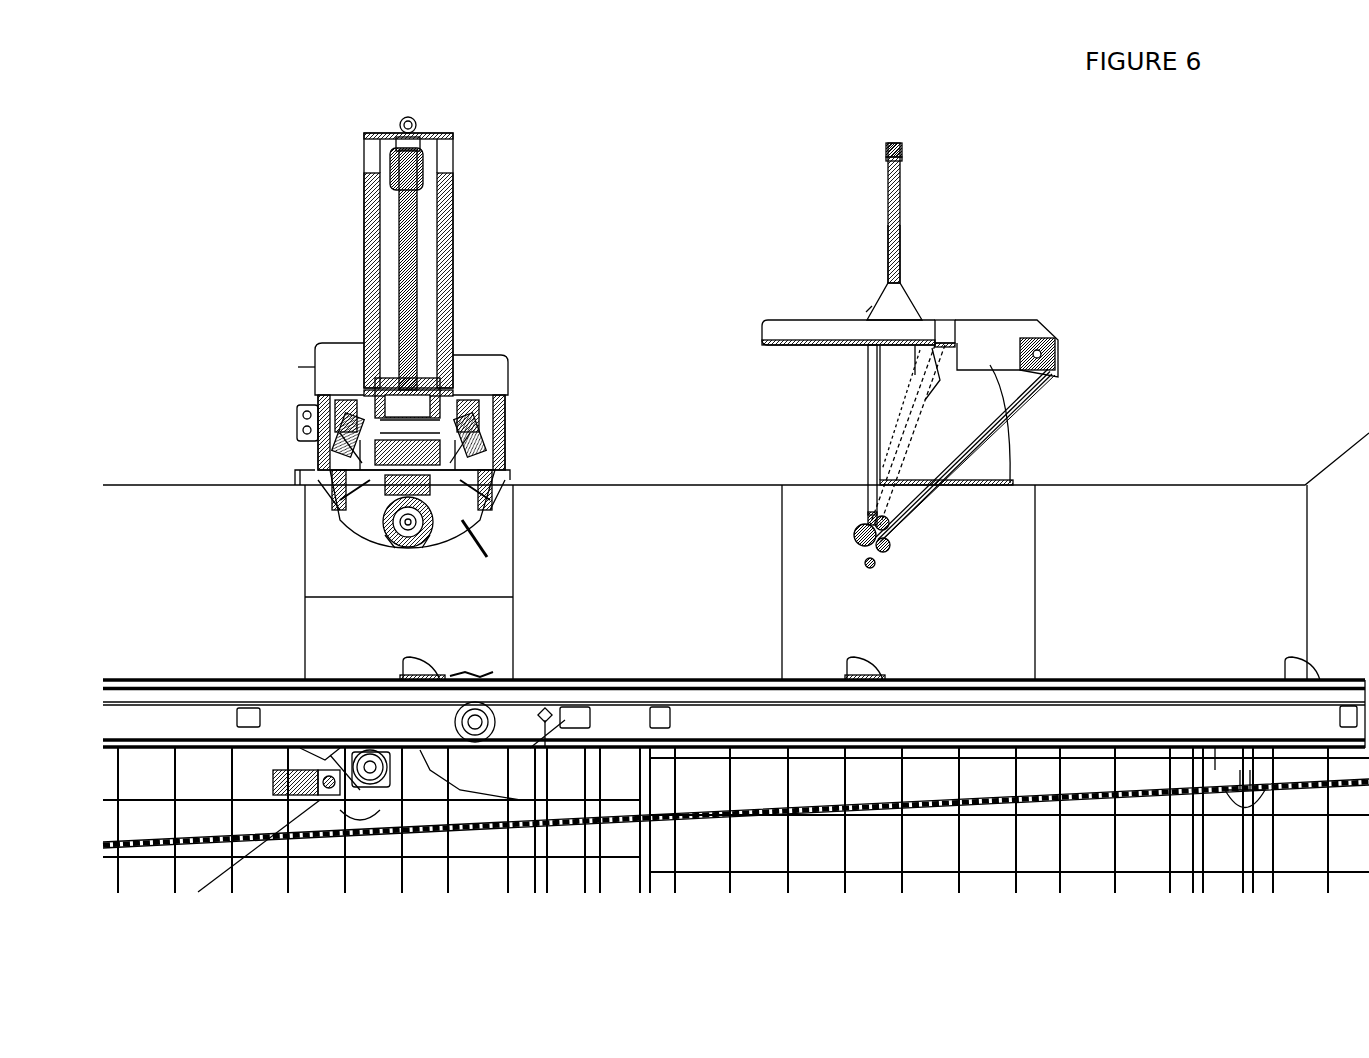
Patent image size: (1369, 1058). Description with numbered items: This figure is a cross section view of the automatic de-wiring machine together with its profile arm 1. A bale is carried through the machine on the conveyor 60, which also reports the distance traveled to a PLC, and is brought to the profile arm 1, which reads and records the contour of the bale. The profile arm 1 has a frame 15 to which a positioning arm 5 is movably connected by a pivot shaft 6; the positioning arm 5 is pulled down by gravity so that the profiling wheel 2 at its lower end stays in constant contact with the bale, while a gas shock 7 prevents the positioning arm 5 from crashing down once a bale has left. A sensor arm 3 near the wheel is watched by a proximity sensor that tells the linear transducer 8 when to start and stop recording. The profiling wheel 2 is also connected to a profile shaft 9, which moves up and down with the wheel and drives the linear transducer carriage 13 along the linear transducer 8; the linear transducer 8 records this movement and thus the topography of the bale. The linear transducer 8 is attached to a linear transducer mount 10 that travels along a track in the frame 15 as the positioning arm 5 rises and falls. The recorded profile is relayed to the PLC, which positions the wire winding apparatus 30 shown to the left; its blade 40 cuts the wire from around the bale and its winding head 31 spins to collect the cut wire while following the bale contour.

The profile arm 1 is at (1086, 319).
The profiling wheel 2 is at (860, 545).
The sensor arm 3 is at (875, 565).
The positioning arm 5 is at (1001, 393).
The pivot shaft 6 is at (1060, 375).
The gas shock 7 is at (933, 380).
The linear transducer 8 is at (903, 187).
The profile shaft 9 is at (867, 400).
The linear transducer mount 10 is at (912, 302).
The linear transducer carriage 13 is at (903, 240).
The frame 15 is at (1013, 320).
The wire winding apparatus 30 is at (294, 264).
The winding head 31 is at (355, 542).
The blade 40 is at (490, 680).
The conveyor 60 is at (875, 665).